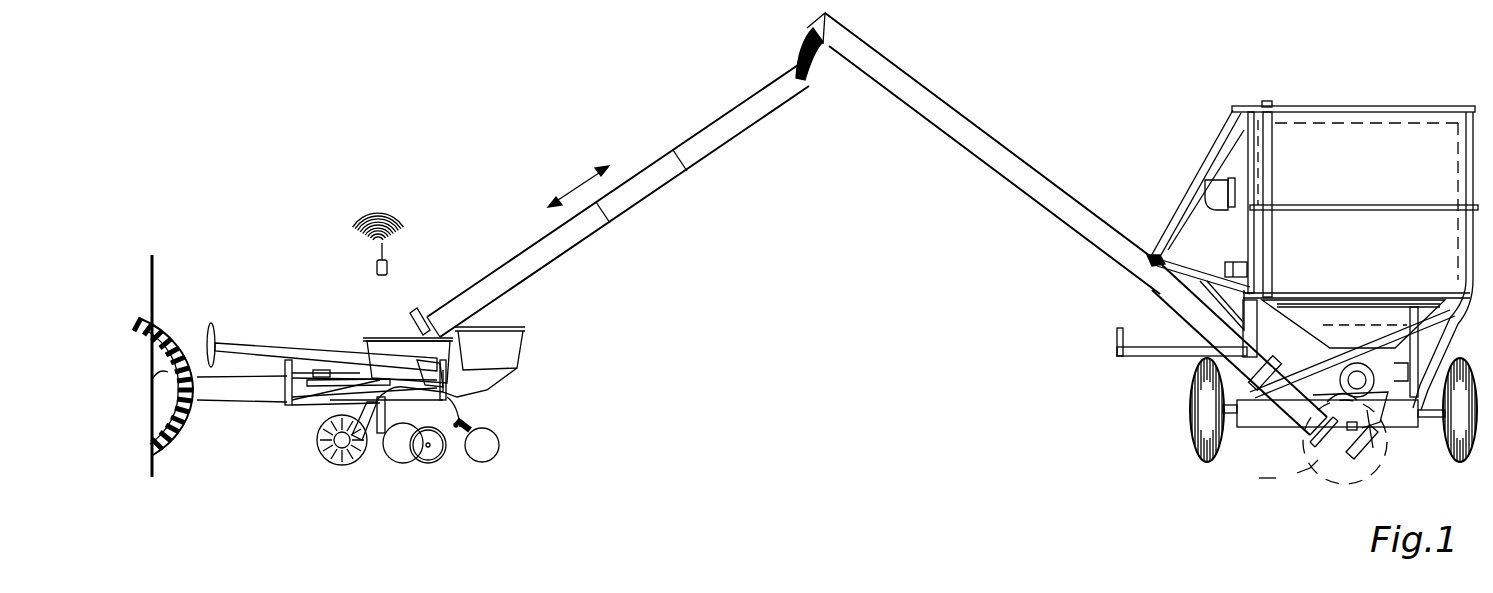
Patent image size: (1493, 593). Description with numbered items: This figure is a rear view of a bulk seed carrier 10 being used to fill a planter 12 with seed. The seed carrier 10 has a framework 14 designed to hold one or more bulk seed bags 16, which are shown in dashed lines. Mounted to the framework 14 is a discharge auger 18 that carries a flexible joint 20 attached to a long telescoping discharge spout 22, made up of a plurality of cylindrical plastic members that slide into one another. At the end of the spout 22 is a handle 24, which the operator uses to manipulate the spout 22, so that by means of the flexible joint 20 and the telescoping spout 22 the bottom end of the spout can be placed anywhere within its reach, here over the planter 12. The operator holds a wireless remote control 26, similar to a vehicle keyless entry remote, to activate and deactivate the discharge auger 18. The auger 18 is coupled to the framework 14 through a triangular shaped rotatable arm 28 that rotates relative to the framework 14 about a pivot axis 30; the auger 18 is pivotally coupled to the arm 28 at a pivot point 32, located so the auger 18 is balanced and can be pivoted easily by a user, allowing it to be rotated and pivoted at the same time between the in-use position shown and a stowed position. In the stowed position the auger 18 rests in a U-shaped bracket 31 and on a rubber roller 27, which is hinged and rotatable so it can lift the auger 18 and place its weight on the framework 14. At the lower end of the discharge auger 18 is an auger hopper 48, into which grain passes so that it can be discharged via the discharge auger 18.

The bulk seed carrier 10 is at (1180, 98).
The planter 12 is at (361, 337).
The framework 14 is at (1428, 100).
The bulk seed bags 16 is at (1358, 175).
The discharge auger 18 is at (1001, 168).
The flexible joint 20 is at (797, 48).
The telescoping discharge spout 22 is at (646, 176).
The handle 24 is at (416, 320).
The wireless remote control 26 is at (374, 268).
The rubber roller 27 is at (1221, 268).
The rotatable arm 28 is at (1210, 158).
The pivot axis 30 is at (1268, 100).
The U-shaped bracket 31 is at (1222, 215).
The pivot point 32 is at (1152, 268).
The auger hopper 48 is at (1378, 425).